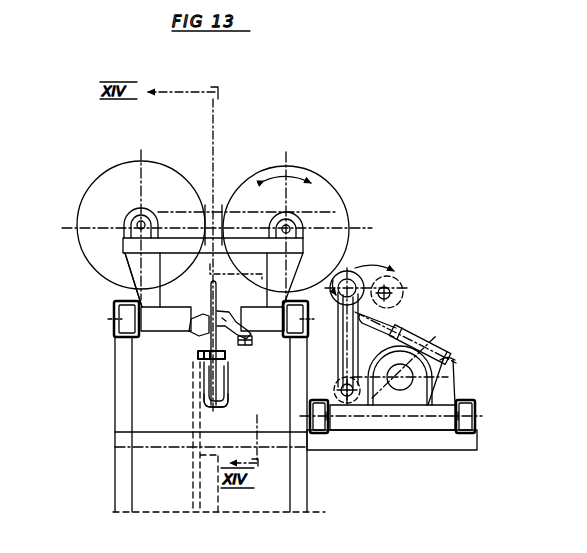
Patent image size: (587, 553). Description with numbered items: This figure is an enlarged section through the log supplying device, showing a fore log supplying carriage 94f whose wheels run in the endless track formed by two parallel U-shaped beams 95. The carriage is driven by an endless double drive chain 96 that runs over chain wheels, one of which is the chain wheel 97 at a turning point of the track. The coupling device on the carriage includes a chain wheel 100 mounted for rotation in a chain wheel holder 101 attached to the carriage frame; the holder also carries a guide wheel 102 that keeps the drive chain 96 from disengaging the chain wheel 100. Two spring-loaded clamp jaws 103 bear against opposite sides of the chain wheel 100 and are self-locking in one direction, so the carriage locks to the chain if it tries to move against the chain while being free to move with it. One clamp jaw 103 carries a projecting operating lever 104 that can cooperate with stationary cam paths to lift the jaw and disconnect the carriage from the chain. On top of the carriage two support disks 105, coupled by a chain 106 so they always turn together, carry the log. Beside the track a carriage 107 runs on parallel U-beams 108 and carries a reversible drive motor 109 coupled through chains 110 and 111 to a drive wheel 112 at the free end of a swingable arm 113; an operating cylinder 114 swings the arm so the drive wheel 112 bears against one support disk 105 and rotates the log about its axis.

The fore log supplying carriage 94f is at (146, 284).
The U-shaped beams 95 is at (110, 319).
The endless double drive chain 96 is at (197, 355).
The chain wheel 97 is at (203, 463).
The chain wheel 100 is at (210, 297).
The chain wheel holder 101 is at (226, 371).
The guide wheel 102 is at (227, 399).
The clamp jaws 103 is at (228, 317).
The operating lever 104 is at (251, 338).
The support disks 105 is at (117, 175).
The chain 106 is at (213, 196).
The carriage 107 is at (412, 423).
The U-beams 108 is at (318, 435).
The reversible drive motor 109 is at (432, 372).
The chain 110 is at (391, 388).
The chain 111 is at (388, 320).
The drive wheel 112 is at (346, 271).
The swingable arm 113 is at (347, 307).
The operating cylinder 114 is at (424, 350).